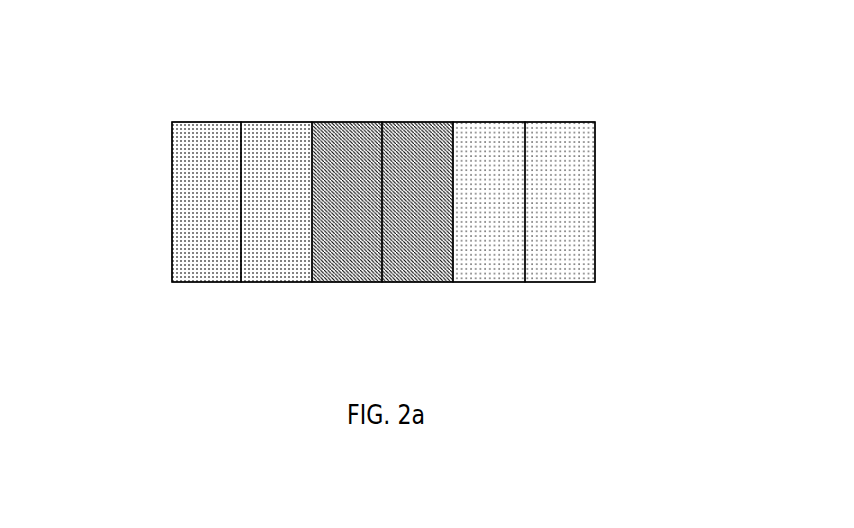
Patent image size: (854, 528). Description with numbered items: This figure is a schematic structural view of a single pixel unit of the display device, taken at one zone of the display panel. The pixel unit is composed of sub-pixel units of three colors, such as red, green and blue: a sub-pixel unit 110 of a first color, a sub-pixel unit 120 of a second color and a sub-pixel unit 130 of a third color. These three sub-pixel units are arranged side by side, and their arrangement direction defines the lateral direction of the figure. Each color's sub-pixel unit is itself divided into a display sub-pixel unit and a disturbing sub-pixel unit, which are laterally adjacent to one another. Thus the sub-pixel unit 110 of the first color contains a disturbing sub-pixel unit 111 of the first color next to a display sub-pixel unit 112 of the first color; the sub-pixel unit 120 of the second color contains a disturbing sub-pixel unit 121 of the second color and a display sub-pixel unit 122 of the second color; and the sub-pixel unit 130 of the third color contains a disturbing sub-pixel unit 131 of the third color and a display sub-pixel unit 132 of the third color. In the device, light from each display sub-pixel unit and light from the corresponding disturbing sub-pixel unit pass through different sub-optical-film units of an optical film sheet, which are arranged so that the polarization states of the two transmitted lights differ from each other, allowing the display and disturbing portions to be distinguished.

The sub-pixel unit of a first color 110 is at (187, 161).
The disturbing sub-pixel unit of the first color 111 is at (223, 137).
The display sub-pixel unit of the first color 112 is at (270, 131).
The sub-pixel unit of a second color 120 is at (429, 239).
The disturbing sub-pixel unit of the second color 121 is at (347, 276).
The display sub-pixel unit of the second color 122 is at (405, 272).
The sub-pixel unit of a third color 130 is at (578, 161).
The disturbing sub-pixel unit of the third color 131 is at (493, 135).
The display sub-pixel unit of the third color 132 is at (542, 135).